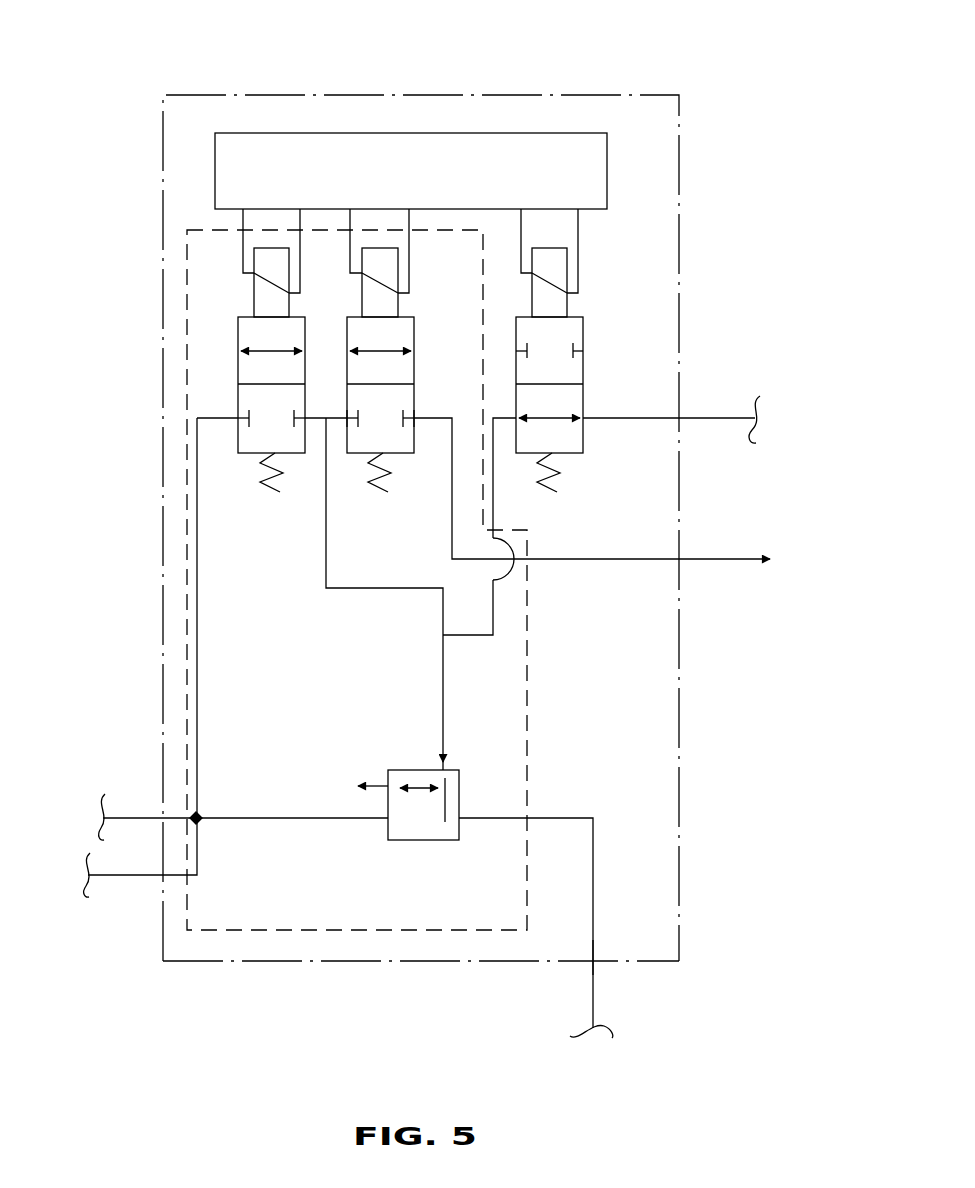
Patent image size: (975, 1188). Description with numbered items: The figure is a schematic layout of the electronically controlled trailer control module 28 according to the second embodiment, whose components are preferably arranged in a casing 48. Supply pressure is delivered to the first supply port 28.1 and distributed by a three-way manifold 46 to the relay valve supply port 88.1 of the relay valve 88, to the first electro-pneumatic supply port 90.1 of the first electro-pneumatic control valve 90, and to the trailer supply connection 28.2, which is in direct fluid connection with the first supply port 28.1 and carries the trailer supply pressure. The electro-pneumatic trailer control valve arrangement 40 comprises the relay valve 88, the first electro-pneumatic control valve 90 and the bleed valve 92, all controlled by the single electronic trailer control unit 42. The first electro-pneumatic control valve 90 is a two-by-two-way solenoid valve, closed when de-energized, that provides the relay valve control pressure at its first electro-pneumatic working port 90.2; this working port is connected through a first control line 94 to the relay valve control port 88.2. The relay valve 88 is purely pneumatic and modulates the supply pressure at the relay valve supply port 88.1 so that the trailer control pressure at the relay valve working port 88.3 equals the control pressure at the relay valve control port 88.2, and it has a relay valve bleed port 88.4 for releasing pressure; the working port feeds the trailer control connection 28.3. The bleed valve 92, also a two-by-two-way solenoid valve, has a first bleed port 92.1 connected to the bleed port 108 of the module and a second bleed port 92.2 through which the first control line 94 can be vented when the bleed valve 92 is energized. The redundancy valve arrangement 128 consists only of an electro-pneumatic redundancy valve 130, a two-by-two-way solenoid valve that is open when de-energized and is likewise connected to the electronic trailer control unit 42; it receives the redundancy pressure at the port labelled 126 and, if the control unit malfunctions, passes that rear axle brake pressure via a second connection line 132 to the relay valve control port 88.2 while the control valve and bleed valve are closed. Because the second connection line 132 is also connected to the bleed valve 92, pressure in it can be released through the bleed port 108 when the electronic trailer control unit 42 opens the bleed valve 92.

The electronically controlled trailer control module 28 is at (690, 164).
The electronic trailer control unit 42 is at (552, 133).
The second bleed port 92.2 is at (347, 418).
The first electro-pneumatic control valve 90 is at (238, 384).
The electro-pneumatic trailer control valve arrangement 40 is at (178, 389).
The first electro-pneumatic supply port 90.1 is at (238, 425).
The first bleed port 92.1 is at (415, 418).
The reservoir pressure port pR 126 is at (681, 417).
The redundancy valve arrangement 128 is at (626, 324).
The electro-pneumatic redundancy valve 130 is at (578, 455).
The bleed valve 92 is at (360, 453).
The first electro-pneumatic working port 90.2 is at (316, 422).
The first control line 94 is at (318, 591).
The bleed port 108 is at (686, 568).
The second connection line 132 is at (460, 637).
The relay valve 88 is at (408, 770).
The relay valve control port 88.2 is at (452, 763).
The relay valve bleed port 88.4 is at (372, 786).
The relay valve working port 88.3 is at (463, 811).
The relay valve supply port 88.1 is at (386, 820).
The first supply port 28.1 is at (156, 806).
The trailer supply connection 28.2 is at (156, 886).
The manifold 46 is at (204, 830).
The casing 48 is at (333, 962).
The trailer control connection 28.3 is at (602, 970).